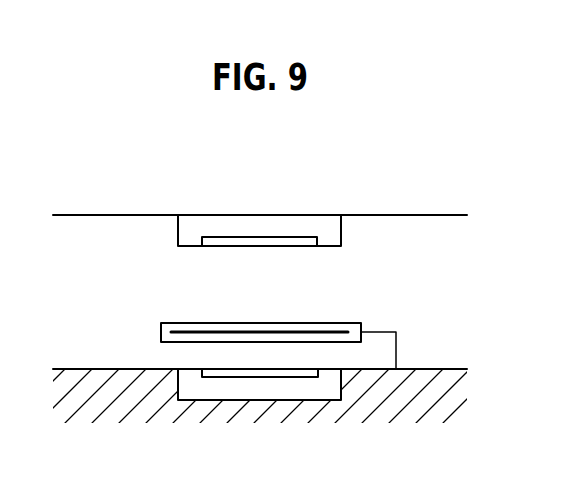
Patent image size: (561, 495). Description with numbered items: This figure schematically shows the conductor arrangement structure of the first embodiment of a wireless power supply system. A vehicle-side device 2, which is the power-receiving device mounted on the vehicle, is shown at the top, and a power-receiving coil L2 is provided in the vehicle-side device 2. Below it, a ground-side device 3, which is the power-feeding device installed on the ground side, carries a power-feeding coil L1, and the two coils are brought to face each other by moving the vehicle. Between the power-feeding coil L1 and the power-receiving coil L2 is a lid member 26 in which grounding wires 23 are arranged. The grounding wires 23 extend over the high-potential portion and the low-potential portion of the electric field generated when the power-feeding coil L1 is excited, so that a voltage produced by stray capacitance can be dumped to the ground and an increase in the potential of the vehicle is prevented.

The vehicle-side device 2 is at (335, 230).
The power-receiving coil L2 is at (266, 241).
The grounding wires 23 is at (188, 332).
The lid member 26 is at (321, 327).
The ground-side device 3 is at (293, 392).
The power-feeding coil L1 is at (232, 374).